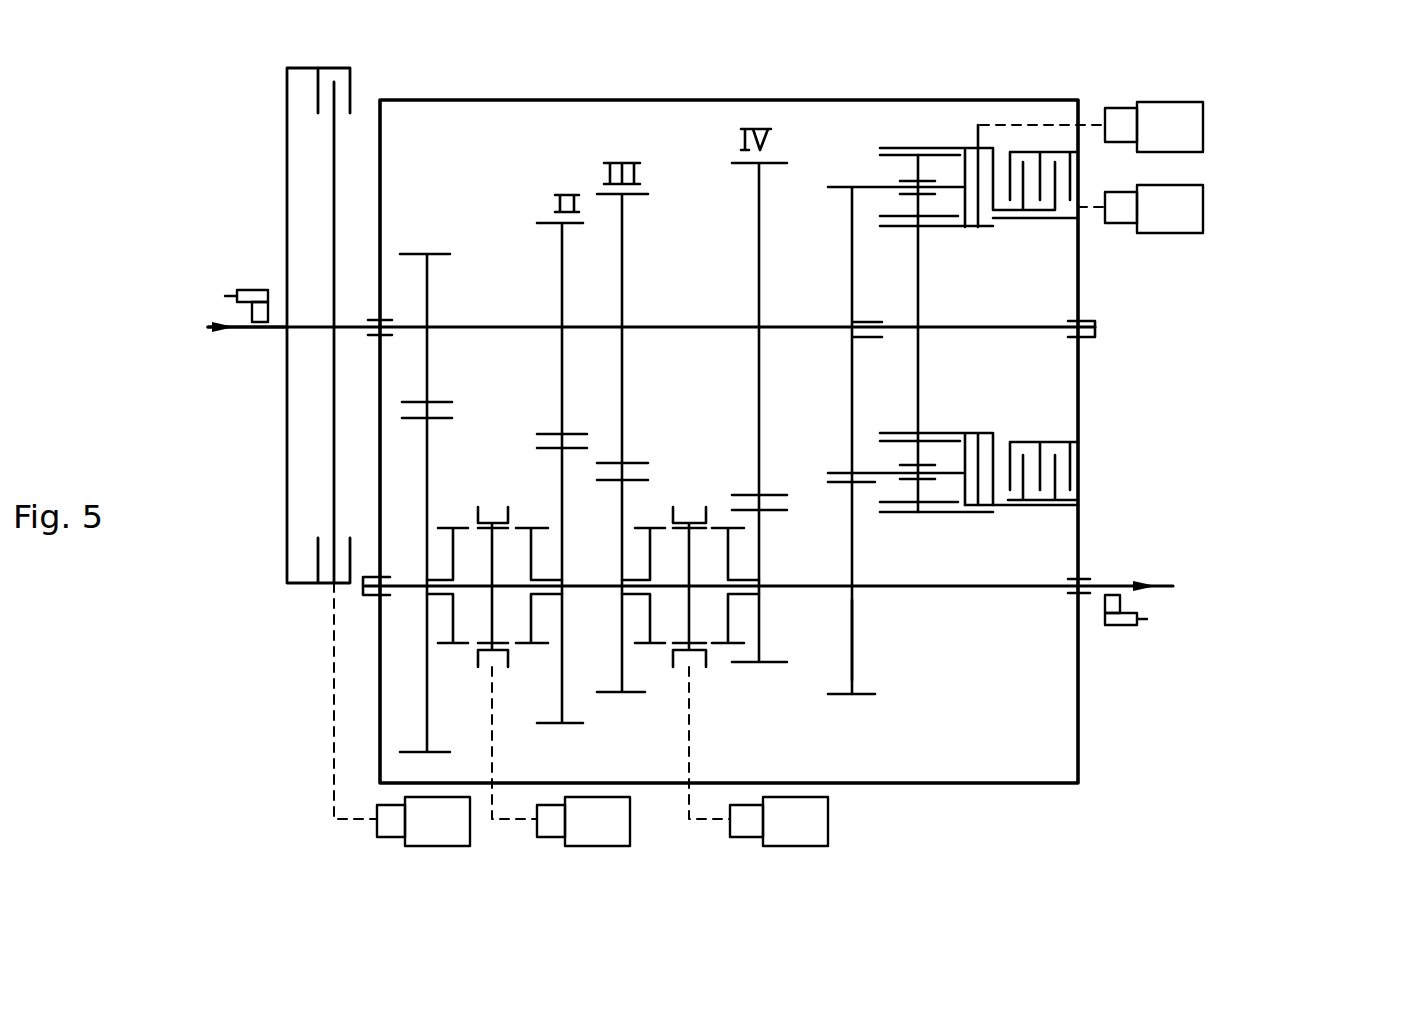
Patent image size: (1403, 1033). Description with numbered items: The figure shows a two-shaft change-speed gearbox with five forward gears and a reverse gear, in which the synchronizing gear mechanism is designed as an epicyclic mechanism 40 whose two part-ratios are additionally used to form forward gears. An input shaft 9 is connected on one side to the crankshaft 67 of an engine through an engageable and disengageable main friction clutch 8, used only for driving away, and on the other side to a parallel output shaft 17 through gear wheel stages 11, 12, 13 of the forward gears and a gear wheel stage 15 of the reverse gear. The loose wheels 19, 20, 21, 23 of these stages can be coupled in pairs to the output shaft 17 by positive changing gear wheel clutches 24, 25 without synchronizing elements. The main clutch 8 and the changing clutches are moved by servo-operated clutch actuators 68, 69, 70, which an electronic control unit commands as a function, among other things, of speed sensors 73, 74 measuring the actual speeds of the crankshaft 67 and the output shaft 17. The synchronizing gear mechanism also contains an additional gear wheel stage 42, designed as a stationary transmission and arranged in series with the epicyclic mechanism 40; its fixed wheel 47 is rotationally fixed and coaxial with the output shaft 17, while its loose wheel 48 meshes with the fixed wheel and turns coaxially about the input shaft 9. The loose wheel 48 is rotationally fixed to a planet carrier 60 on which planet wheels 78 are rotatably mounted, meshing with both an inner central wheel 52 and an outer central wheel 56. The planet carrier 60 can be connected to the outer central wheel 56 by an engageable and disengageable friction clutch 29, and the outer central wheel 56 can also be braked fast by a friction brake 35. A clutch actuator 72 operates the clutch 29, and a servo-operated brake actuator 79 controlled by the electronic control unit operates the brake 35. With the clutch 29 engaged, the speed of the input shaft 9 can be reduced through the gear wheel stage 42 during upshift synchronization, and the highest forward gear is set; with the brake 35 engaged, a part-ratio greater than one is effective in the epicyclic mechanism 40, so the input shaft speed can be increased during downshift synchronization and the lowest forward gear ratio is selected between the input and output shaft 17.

The main friction clutch 8 is at (303, 602).
The input shaft 9 is at (668, 323).
The gear wheel stage 11 is at (541, 212).
The gear wheel stage 12 is at (648, 182).
The gear wheel stage 13 is at (775, 150).
The gear wheel stage of the reverse gear 15 is at (438, 246).
The output shaft 17 is at (1005, 594).
The loose wheel 19 is at (556, 675).
The loose wheel 20 is at (622, 666).
The loose wheel 21 is at (760, 632).
The loose wheel 23 is at (427, 687).
The changing gear wheel clutch 24 is at (493, 501).
The changing gear wheel clutch 25 is at (692, 501).
The friction clutch 29 is at (990, 426).
The friction brake 35 is at (1086, 455).
The epicyclic mechanism 40 is at (870, 166).
The gear wheel stage 42 is at (854, 697).
The fixed wheel 47 is at (853, 640).
The loose wheel 48 is at (849, 415).
The inner central wheel 52 is at (918, 392).
The outer central wheel 56 is at (942, 516).
The planet carrier 60 is at (866, 466).
The crankshaft 67 is at (253, 331).
The clutch actuator 68 is at (450, 850).
The clutch actuator 69 is at (586, 851).
The clutch actuator 70 is at (776, 851).
The clutch actuator 72 is at (1206, 122).
The speed sensor 73 is at (246, 283).
The speed sensor 74 is at (1117, 630).
The planet wheels 78 is at (926, 206).
The brake actuator 79 is at (1206, 207).